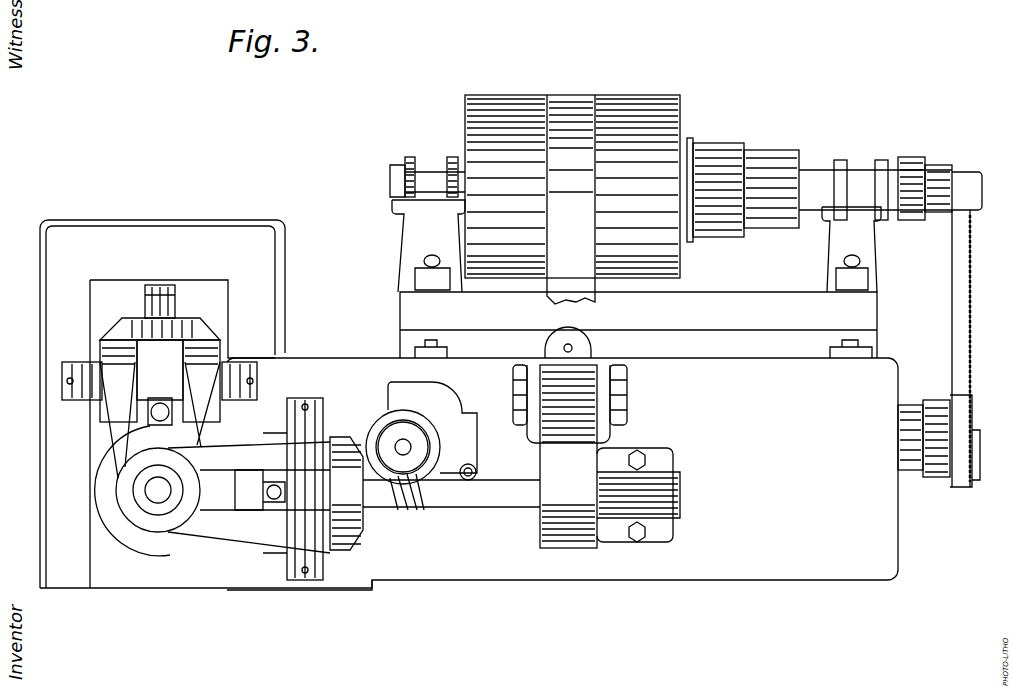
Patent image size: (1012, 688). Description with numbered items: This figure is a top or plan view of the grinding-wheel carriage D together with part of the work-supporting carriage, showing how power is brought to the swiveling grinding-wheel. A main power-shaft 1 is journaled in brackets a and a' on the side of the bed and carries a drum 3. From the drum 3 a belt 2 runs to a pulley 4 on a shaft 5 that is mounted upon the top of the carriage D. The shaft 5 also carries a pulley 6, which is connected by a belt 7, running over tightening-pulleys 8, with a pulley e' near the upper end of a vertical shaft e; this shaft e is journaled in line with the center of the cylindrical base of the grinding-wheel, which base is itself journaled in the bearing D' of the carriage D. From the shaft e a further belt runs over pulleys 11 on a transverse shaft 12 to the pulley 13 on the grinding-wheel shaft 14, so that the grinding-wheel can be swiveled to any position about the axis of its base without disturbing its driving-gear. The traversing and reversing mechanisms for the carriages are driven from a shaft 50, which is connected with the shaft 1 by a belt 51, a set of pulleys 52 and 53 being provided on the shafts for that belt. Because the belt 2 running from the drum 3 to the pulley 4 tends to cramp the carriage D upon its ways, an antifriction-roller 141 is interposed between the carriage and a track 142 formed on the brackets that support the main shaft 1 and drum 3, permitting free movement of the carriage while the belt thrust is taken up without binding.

The main power-shaft 1 is at (388, 180).
The belt 2 is at (571, 199).
The drum 3 is at (500, 95).
The pulley 4 is at (598, 548).
The shaft 5 is at (478, 502).
The pulley 6 is at (366, 505).
The belt 7 is at (293, 489).
The tightening-pulleys 8 is at (270, 470).
The pulleys 11 is at (88, 400).
The transverse shaft 12 is at (160, 409).
The pulley 13 is at (175, 328).
The grinding-wheel shaft 14 is at (145, 298).
The shaft 50 is at (974, 485).
The belt 51 is at (968, 286).
The pulley 52 is at (935, 164).
The pulley 53 is at (936, 400).
The antifriction-roller 141 is at (572, 336).
The track 142 is at (818, 329).
The bracket a is at (428, 246).
The bracket a' is at (851, 249).
The carriage D is at (562, 474).
The bearing D' is at (190, 404).
The vertical shaft e is at (158, 489).
The pulley e' is at (249, 497).